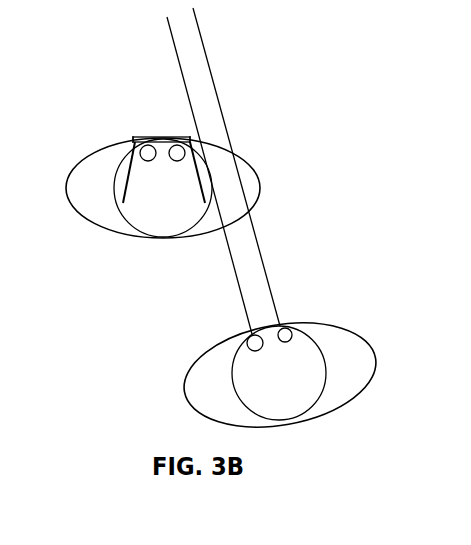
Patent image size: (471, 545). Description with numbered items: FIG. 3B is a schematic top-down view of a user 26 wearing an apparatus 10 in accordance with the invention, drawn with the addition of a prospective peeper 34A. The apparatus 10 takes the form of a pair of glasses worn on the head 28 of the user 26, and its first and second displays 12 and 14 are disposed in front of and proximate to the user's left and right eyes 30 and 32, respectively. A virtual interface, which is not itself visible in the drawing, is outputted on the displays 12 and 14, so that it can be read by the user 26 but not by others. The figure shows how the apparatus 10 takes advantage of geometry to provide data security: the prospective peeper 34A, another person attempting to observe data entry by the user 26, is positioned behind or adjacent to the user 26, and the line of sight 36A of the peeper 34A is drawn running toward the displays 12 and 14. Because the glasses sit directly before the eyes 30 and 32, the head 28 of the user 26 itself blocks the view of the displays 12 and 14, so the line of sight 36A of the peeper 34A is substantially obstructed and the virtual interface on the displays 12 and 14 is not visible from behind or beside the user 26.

The apparatus 10 is at (132, 138).
The first display 12 is at (158, 143).
The second display 14 is at (168, 143).
The user 26 is at (83, 220).
The head 28 is at (127, 226).
The left eye 30 is at (146, 162).
The right eye 32 is at (178, 162).
The prospective peeper 34A is at (200, 360).
The line of sight 36A is at (275, 308).